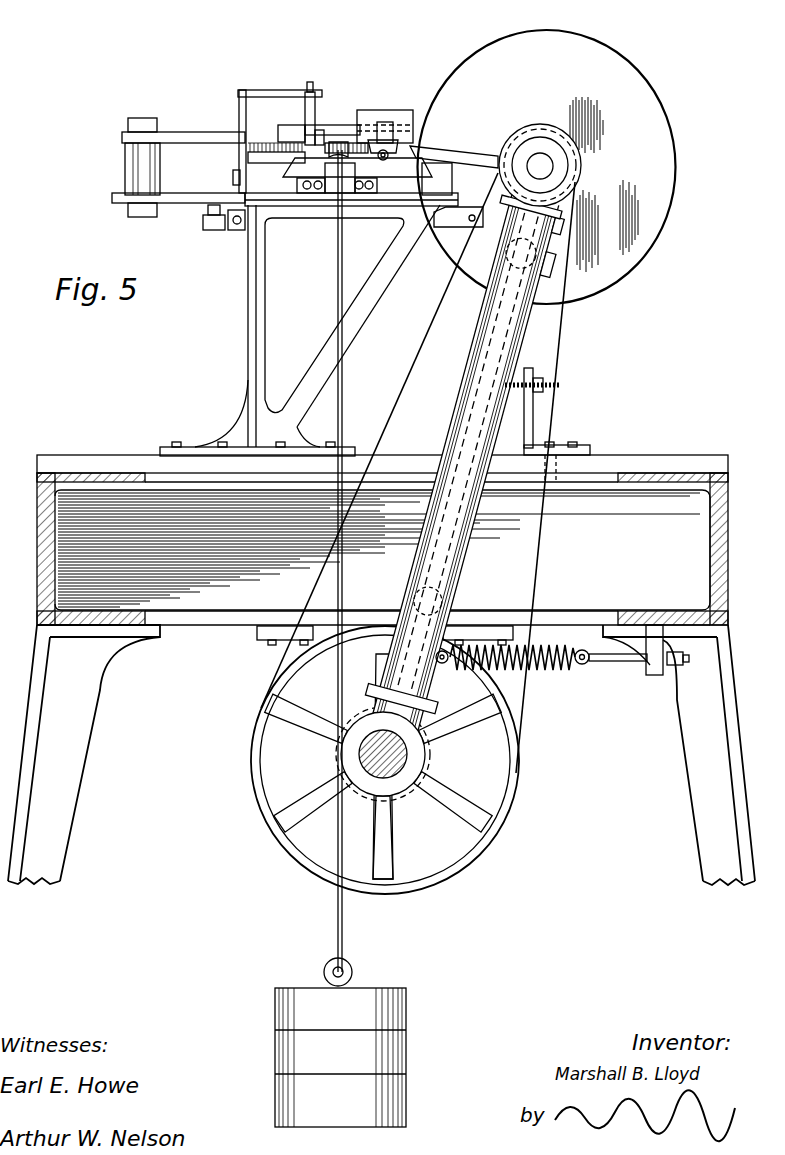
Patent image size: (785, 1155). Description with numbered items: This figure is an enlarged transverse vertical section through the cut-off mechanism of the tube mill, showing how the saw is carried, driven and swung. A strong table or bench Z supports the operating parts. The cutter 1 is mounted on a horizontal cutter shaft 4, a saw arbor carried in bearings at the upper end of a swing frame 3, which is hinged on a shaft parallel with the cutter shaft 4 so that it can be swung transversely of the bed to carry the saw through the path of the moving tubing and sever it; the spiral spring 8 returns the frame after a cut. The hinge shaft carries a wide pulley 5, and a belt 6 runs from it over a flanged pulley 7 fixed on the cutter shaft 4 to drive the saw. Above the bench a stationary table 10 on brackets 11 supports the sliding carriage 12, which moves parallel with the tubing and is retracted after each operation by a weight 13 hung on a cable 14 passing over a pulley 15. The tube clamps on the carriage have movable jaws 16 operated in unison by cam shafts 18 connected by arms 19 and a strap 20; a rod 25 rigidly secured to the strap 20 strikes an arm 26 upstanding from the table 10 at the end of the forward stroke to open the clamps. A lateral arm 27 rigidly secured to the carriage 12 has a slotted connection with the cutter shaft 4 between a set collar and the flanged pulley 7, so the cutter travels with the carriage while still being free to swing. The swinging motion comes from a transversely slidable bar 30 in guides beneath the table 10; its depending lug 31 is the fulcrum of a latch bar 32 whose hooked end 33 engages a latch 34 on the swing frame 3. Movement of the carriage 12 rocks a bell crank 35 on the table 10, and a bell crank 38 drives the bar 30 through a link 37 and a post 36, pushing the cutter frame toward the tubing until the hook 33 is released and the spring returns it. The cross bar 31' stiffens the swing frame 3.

The cutter 1 is at (598, 46).
The swing frame 3 is at (482, 300).
The cutter shaft 4 is at (541, 165).
The wide pulley 5 is at (457, 860).
The belt 6 is at (522, 733).
The flanged pulley 7 is at (582, 167).
The spiral spring 8 is at (558, 672).
The stationary table 10 is at (276, 185).
The brackets 11 is at (253, 343).
The sliding carriage 12 is at (390, 178).
The weight 13 is at (340, 1042).
The cable 14 is at (337, 300).
The pulley 15 is at (335, 190).
The movable jaw 16 is at (386, 140).
The cam shafts 18 is at (333, 127).
The arms 19 is at (305, 110).
The strap 20 is at (311, 92).
The rod 25 is at (265, 90).
The arm 26 is at (240, 113).
The lateral arm 27 is at (462, 158).
The transversely slidable bar 30 is at (185, 203).
The depending lug 31 is at (227, 247).
The belt guide 31' is at (554, 401).
The latch bar 32 is at (217, 230).
The hooked end 33 is at (562, 220).
The latch 34 is at (527, 253).
The bell crank 35 is at (462, 228).
The post 36 is at (124, 170).
The link 37 is at (192, 141).
The bell crank 38 is at (319, 131).
The table Z is at (68, 473).